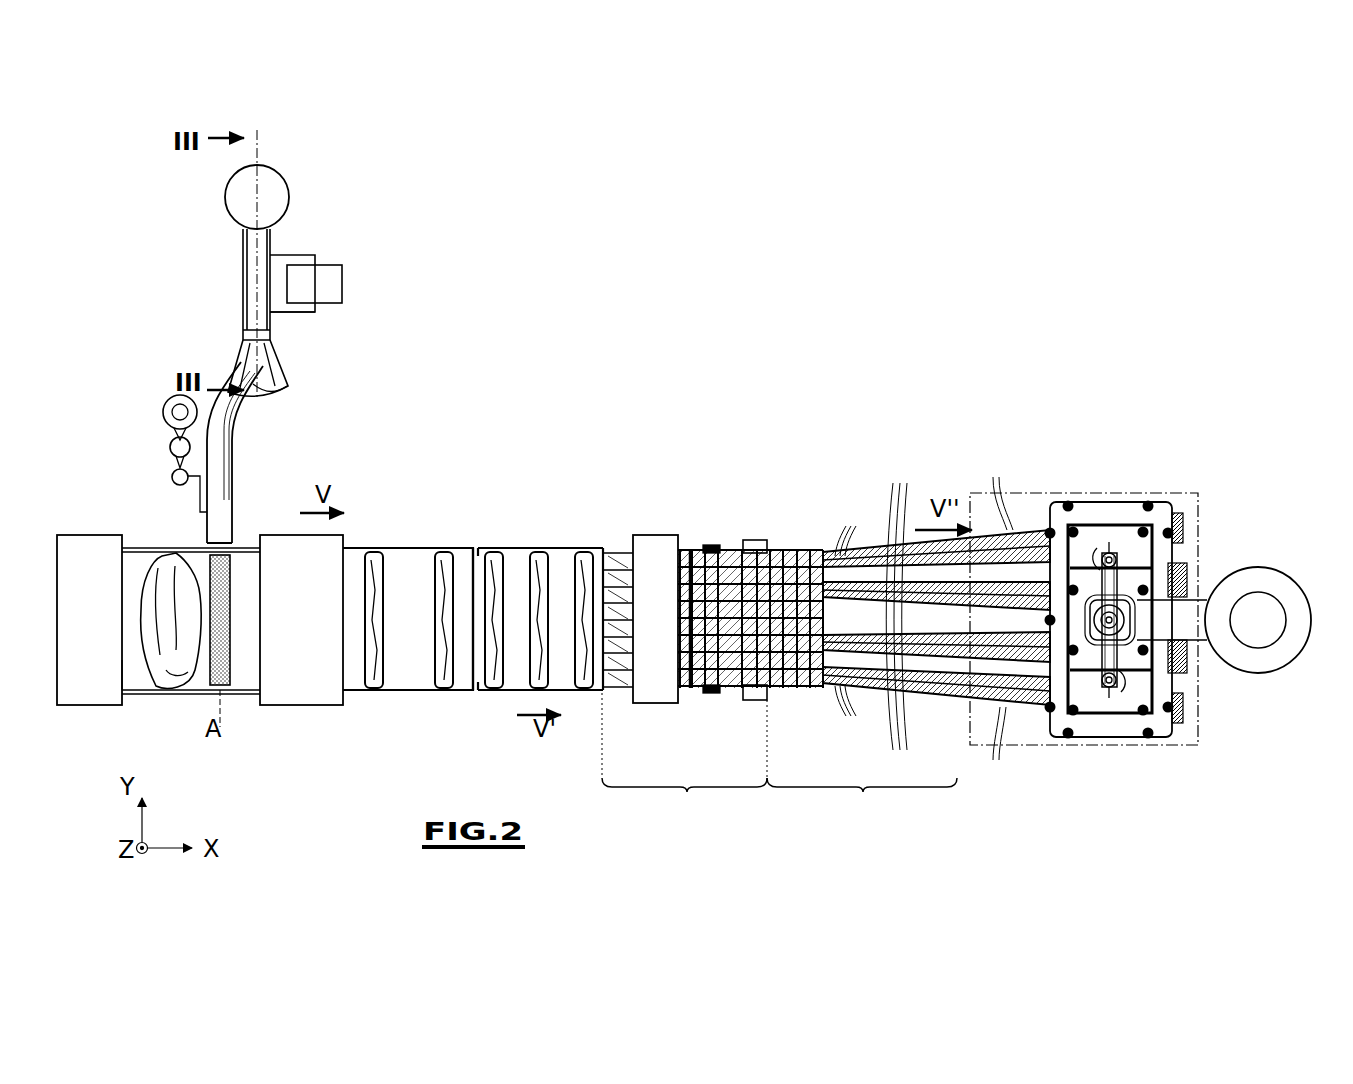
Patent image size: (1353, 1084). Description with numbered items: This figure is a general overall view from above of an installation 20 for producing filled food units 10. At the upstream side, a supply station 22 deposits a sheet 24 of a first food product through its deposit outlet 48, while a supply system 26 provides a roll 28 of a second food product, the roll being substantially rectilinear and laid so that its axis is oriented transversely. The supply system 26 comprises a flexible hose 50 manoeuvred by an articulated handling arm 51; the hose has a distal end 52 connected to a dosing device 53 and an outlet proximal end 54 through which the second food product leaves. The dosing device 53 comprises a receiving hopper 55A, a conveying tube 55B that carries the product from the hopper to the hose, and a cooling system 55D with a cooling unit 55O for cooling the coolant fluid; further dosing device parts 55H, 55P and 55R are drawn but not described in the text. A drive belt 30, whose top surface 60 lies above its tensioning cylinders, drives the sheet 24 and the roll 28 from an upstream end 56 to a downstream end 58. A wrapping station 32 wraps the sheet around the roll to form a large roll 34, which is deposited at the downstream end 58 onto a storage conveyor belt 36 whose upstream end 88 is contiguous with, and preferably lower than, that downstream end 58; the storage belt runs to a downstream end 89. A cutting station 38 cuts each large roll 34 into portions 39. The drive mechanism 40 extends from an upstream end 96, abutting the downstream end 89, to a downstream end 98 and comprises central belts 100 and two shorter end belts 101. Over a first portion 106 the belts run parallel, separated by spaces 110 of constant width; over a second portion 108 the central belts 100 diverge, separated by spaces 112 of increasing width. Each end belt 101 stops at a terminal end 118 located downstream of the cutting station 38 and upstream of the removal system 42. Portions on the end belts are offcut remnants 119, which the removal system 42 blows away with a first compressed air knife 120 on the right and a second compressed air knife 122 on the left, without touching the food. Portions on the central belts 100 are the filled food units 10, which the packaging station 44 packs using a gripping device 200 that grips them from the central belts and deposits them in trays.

The filled food units 10 is at (852, 622).
The installation 20 is at (648, 427).
The supply station 22 is at (89, 620).
The sheet 24 is at (170, 678).
The supply system 26 is at (167, 383).
The roll 28 is at (230, 654).
The drive belt 30 is at (473, 586).
The wrapping station 32 is at (301, 620).
The large roll 34 is at (497, 560).
The storage conveyor belt 36 is at (515, 548).
The cutting station 38 is at (655, 619).
The portions 39 is at (690, 668).
The drive mechanism 40 is at (931, 477).
The removal system 42 is at (785, 552).
The packaging station 44 is at (1075, 747).
The deposit outlet 48 is at (129, 560).
The flexible hose 50 is at (232, 470).
The articulated handling arm 51 is at (158, 463).
The distal end 52 is at (247, 380).
The dosing device 53 is at (360, 206).
The outlet proximal end 54 is at (196, 548).
The receiving hopper 55A is at (225, 190).
The conveying tube 55B is at (243, 270).
The cooling system 55D is at (360, 258).
The funnel 55H is at (287, 379).
The cooling unit 55O is at (337, 288).
The plate 55P is at (297, 312).
The bracket 55R is at (297, 253).
The upstream end 56 is at (120, 668).
The downstream end 58 is at (473, 678).
The top surface 60 is at (408, 619).
The upstream end 88 is at (468, 560).
The downstream end 89 is at (598, 550).
The upstream end 96 is at (607, 693).
The downstream end 98 is at (1183, 533).
The central belts 100 is at (902, 618).
The end belts 101 is at (718, 550).
The first portion 106 is at (712, 685).
The second portion 108 is at (908, 677).
The space 110 is at (612, 591).
The space 112 is at (1001, 616).
The terminal end 118 is at (757, 543).
The offcut remnants 119 is at (707, 552).
The first compressed air knife 120 is at (766, 699).
The second compressed air knife 122 is at (767, 541).
The gripping device 200 is at (1265, 550).